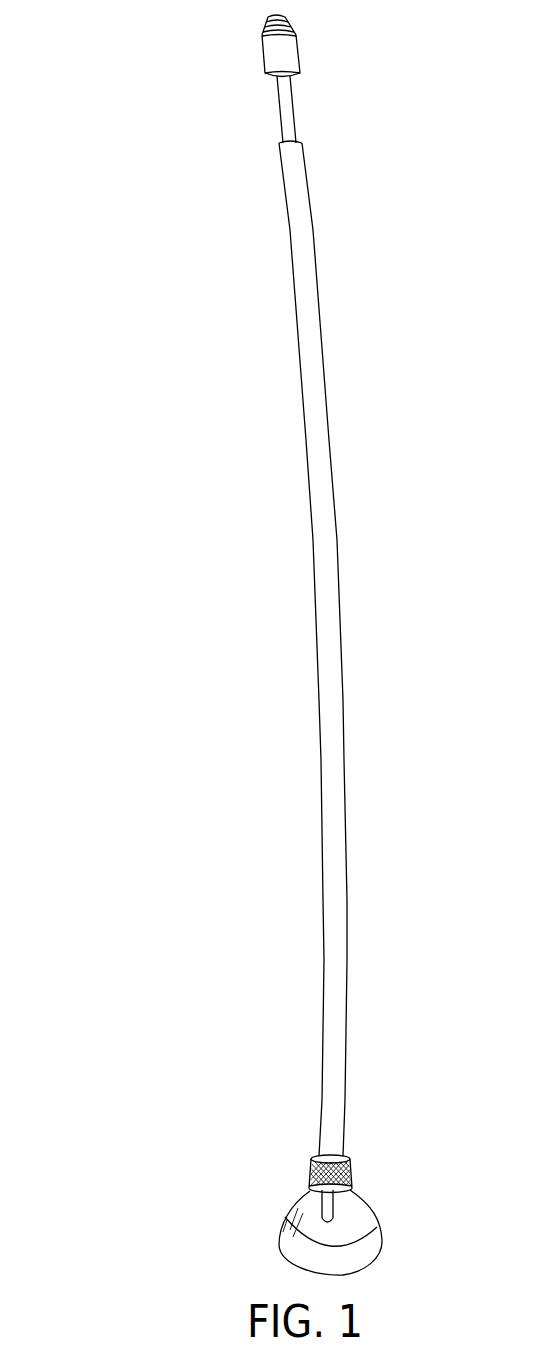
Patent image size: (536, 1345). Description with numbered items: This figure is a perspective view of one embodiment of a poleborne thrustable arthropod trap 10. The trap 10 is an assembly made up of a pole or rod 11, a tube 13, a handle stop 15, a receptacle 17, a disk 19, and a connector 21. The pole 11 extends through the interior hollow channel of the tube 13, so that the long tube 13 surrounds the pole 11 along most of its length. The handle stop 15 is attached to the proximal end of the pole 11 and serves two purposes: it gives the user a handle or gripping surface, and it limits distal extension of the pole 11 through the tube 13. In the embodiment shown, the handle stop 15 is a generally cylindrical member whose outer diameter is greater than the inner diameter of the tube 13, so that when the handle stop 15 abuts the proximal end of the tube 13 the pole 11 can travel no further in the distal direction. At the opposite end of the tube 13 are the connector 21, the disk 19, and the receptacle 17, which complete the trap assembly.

The poleborne thrustable arthropod trap 10 is at (150, 128).
The pole 11 is at (295, 118).
The tube 13 is at (335, 508).
The handle stop 15 is at (285, 60).
The receptacle 17 is at (283, 1233).
The disk 19 is at (377, 1228).
The connector 21 is at (353, 1158).